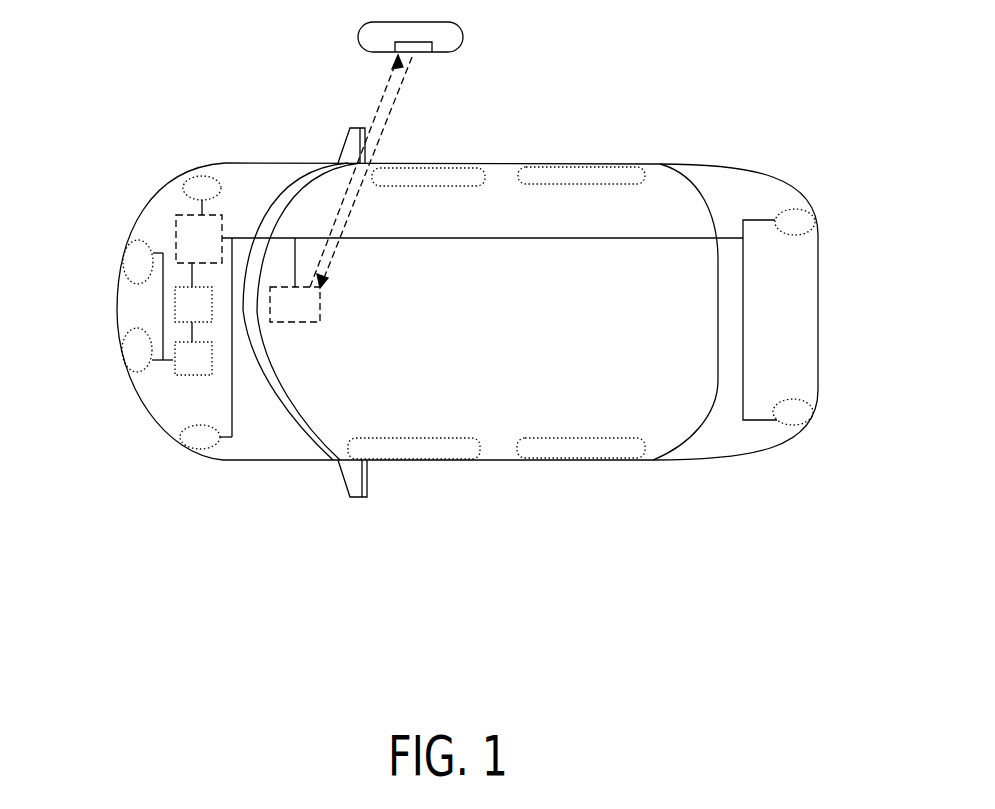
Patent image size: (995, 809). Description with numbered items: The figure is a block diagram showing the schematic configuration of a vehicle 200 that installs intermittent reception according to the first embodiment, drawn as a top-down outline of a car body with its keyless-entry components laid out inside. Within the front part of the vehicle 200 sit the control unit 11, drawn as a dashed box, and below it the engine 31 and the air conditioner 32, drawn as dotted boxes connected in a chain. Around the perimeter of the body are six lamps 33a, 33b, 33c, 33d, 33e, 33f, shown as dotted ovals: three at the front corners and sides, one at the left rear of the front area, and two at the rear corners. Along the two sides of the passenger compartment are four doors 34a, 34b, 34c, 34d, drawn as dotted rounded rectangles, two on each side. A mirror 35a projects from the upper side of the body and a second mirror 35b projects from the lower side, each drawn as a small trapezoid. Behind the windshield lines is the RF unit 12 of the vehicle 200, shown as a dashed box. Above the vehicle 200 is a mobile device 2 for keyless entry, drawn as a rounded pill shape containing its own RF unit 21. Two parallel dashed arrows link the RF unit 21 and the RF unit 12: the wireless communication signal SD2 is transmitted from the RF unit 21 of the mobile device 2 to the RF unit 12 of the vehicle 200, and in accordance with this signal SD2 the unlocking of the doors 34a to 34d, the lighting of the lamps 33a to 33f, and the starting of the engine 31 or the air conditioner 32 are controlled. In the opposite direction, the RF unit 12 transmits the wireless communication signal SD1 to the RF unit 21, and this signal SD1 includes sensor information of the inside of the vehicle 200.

The vehicle 200 is at (733, 147).
The mobile device 2 is at (358, 40).
The RF unit 21 is at (433, 52).
The wireless communication signal SD1 is at (356, 171).
The wireless communication signal SD2 is at (372, 172).
The control unit 11 is at (222, 212).
The RF unit 12 is at (317, 323).
The engine 31 is at (175, 304).
The air conditioner 32 is at (175, 375).
The lamp 33a is at (127, 245).
The lamp 33b is at (122, 357).
The lamp 33c is at (188, 178).
The lamp 33d is at (190, 450).
The lamp 33e is at (815, 215).
The lamp 33f is at (793, 425).
The door 34a is at (490, 173).
The door 34b is at (478, 452).
The door 34c is at (643, 177).
The door 34d is at (650, 457).
The mirror 35a is at (345, 158).
The mirror 35b is at (363, 498).